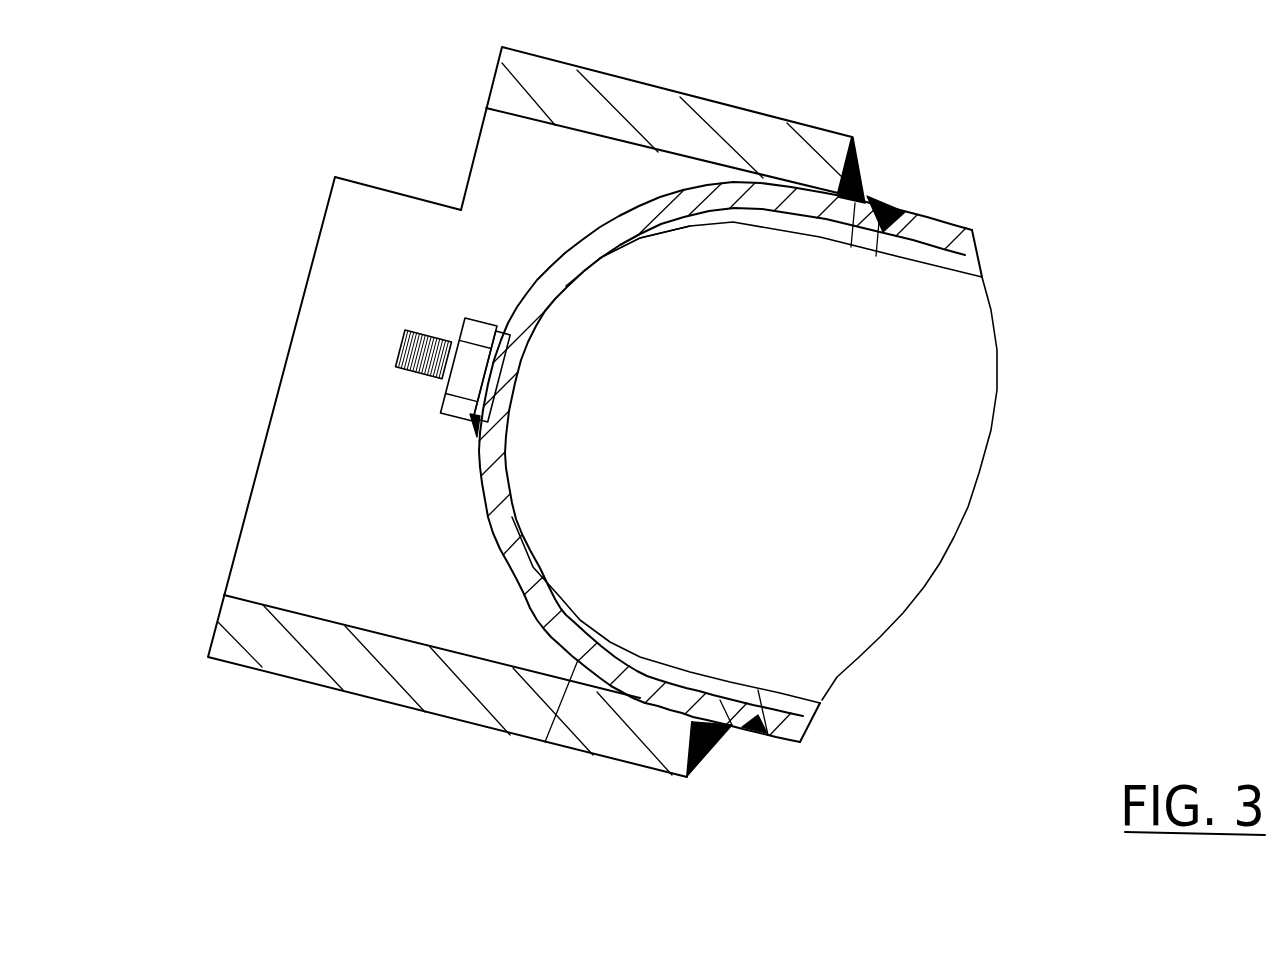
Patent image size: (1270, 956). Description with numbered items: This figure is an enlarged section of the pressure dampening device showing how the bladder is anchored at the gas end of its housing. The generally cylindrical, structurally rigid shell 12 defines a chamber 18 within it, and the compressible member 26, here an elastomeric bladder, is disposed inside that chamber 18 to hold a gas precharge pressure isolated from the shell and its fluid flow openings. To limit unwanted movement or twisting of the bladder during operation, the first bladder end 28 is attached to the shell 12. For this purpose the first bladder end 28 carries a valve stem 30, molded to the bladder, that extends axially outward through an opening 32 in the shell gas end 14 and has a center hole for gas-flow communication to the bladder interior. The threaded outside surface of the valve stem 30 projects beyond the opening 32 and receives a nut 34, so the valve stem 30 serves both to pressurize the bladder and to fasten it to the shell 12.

The housing body or shell 12 is at (938, 232).
The gas end 14 is at (503, 525).
The chamber 18 is at (740, 683).
The compressible member 26 is at (766, 475).
The first bladder end 28 is at (543, 328).
The valve stem 30 is at (403, 375).
The opening 32 is at (508, 392).
The nut 34 is at (461, 390).